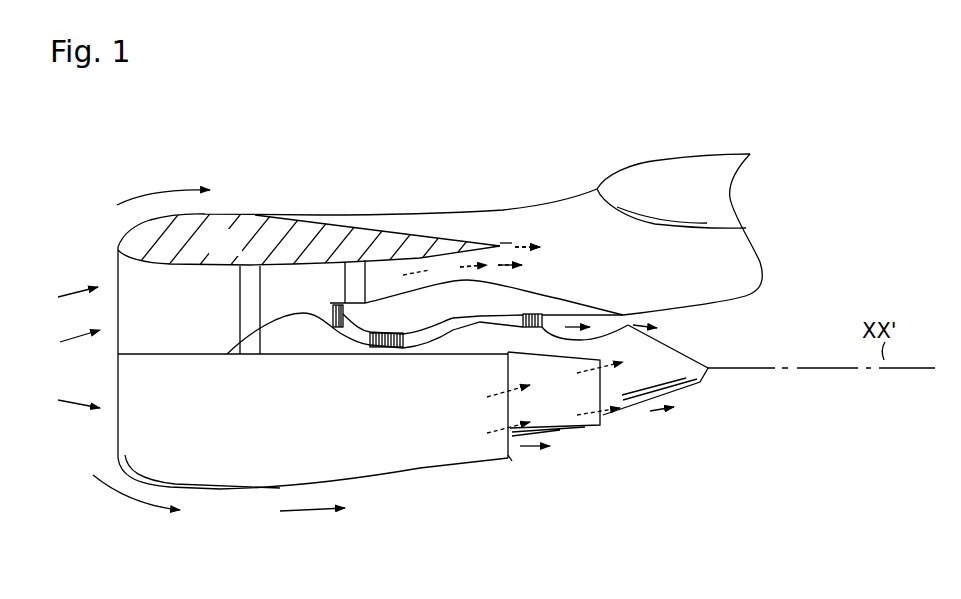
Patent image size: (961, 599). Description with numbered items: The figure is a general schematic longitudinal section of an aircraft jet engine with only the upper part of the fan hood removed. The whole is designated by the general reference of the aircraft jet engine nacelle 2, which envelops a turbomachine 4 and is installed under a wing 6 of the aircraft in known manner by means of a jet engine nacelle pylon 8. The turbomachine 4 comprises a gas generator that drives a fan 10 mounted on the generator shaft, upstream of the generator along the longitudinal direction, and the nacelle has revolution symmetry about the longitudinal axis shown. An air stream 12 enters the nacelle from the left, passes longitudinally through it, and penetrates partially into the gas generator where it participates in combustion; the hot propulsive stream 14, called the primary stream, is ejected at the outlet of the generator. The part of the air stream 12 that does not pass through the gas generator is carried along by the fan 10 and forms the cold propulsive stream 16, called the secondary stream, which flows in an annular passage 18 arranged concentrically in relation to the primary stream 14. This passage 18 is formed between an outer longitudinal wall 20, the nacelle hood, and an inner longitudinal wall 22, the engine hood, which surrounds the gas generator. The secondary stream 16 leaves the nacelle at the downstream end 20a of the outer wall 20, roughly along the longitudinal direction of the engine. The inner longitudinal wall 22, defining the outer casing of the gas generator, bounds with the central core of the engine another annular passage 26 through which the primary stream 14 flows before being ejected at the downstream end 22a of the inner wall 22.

The aircraft jet engine nacelle 2 is at (233, 199).
The turbomachine 4 is at (405, 293).
The wing 6 is at (715, 155).
The jet engine nacelle pylon 8 is at (458, 226).
The fan 10 is at (240, 294).
The air stream 12 is at (72, 290).
The hot propulsive stream 14 is at (578, 322).
The cold propulsive stream 16 is at (498, 265).
The annular passage 18 is at (383, 274).
The outer longitudinal wall 20 is at (238, 254).
The downstream end of outer wall 20a is at (511, 243).
The inner longitudinal wall 22 is at (428, 325).
The downstream end of inner wall 22a is at (602, 428).
The annular passage 26 is at (552, 312).